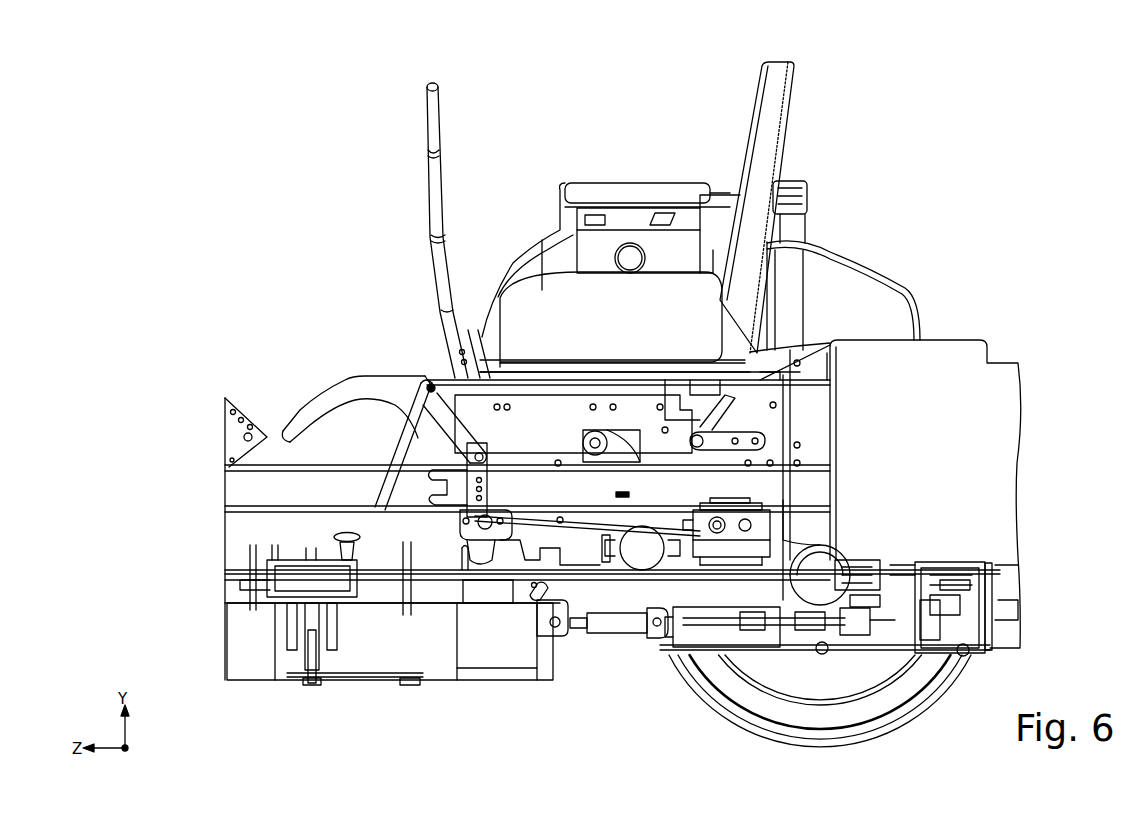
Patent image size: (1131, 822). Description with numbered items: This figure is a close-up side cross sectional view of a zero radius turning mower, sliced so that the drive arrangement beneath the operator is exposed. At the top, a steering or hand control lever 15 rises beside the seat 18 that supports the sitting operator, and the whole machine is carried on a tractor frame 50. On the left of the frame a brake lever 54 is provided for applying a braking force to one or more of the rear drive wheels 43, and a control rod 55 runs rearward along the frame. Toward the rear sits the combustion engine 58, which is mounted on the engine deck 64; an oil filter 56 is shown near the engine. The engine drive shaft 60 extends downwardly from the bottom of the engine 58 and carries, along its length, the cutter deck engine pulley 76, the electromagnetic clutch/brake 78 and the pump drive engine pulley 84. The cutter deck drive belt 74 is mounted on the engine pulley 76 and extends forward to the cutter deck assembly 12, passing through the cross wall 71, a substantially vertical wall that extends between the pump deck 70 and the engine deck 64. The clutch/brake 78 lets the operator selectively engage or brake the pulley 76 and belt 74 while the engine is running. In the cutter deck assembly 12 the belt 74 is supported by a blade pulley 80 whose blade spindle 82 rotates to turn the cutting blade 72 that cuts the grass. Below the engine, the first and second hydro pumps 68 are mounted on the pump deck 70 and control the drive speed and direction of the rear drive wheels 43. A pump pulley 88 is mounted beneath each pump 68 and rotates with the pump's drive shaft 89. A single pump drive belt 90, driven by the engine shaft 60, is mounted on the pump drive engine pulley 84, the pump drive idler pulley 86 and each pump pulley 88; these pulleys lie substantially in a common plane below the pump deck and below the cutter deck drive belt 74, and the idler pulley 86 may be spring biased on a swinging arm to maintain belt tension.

The cutter deck assembly 12 is at (468, 708).
The steering or hand control lever 15 is at (436, 182).
The seat 18 is at (770, 138).
The rear drive wheel 43 is at (802, 713).
The tractor frame 50 is at (347, 485).
The brake lever 54 is at (303, 412).
The control rod 55 is at (525, 511).
The oil filter 56 is at (637, 558).
The combustion engine 58 is at (955, 459).
The engine drive shaft 60 is at (913, 560).
The engine deck 64 is at (842, 560).
The hydro pump 68 is at (677, 532).
The pump deck 70 is at (660, 632).
The cross wall 71 is at (790, 523).
The cutting blade 72 is at (352, 677).
The cutter deck drive belt 74 is at (783, 530).
The cutter deck engine pulley 76 is at (948, 560).
The electromagnetic clutch/brake 78 is at (970, 652).
The blade pulley 80 is at (292, 565).
The blade spindle 82 is at (308, 680).
The pump drive engine pulley 84 is at (930, 607).
The pump drive idler pulley 86 is at (855, 623).
The pump pulley 88 is at (740, 623).
The drive shaft 89 is at (730, 633).
The pump drive belt 90 is at (853, 625).